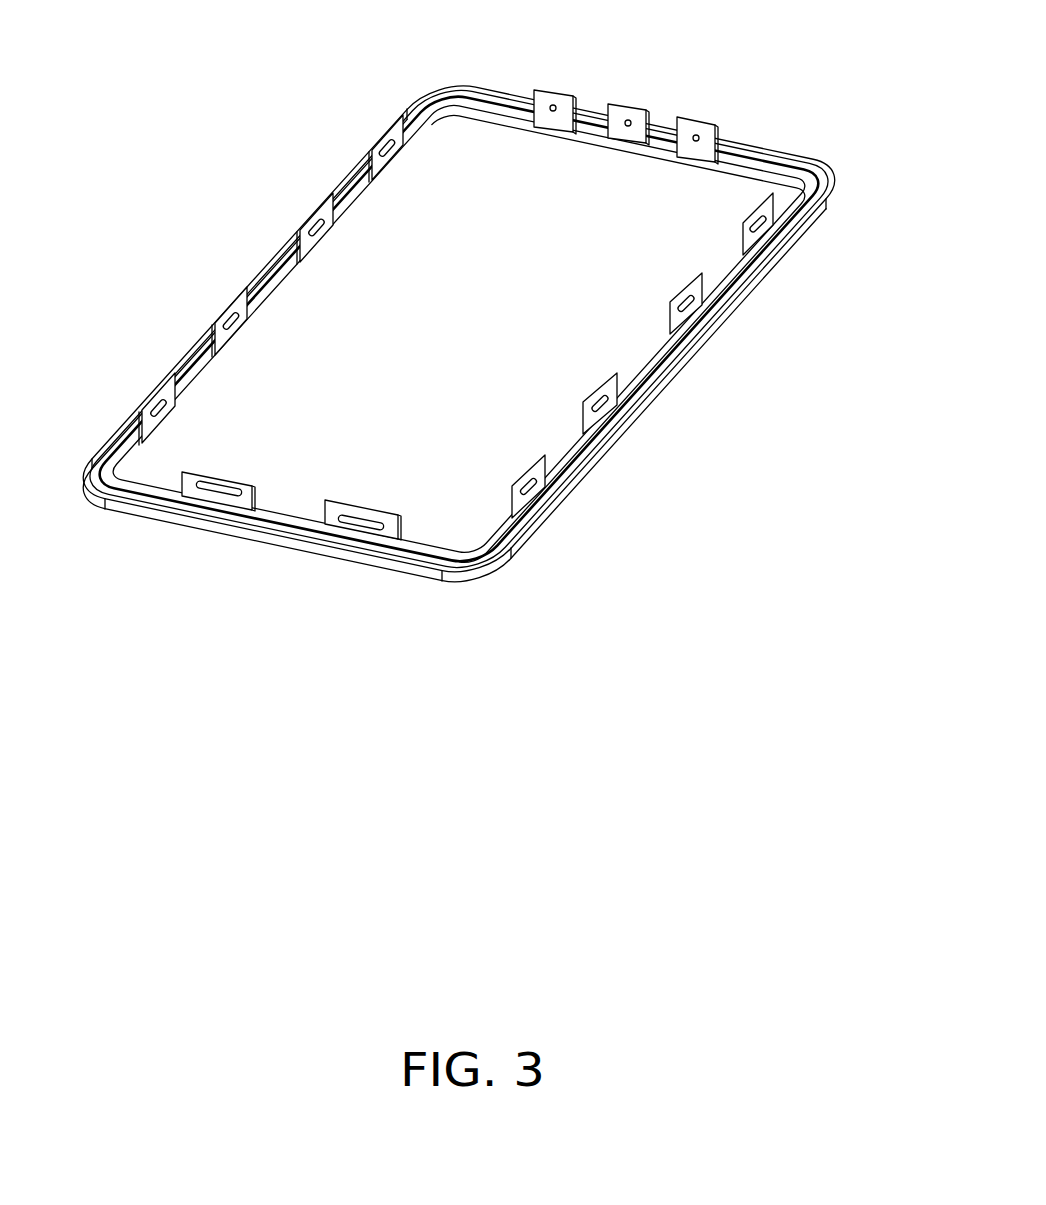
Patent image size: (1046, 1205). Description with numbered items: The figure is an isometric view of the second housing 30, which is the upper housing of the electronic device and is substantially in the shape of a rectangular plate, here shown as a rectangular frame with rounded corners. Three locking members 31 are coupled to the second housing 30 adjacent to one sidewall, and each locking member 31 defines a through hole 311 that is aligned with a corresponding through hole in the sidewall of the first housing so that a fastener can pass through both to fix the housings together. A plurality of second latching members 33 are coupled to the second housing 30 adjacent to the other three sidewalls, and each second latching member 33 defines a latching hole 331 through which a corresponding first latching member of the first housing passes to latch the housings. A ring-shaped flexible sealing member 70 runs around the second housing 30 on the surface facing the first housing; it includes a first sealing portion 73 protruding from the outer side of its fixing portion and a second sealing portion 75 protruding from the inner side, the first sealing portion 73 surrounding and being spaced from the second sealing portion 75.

The second housing 30 is at (618, 338).
The locking member 31 is at (566, 104).
The through hole 311 is at (553, 104).
The second latching member 33 is at (766, 250).
The latching hole 331 is at (757, 218).
The flexible sealing member 70 is at (795, 159).
The first sealing portion 73 is at (103, 443).
The second sealing portion 75 is at (118, 418).